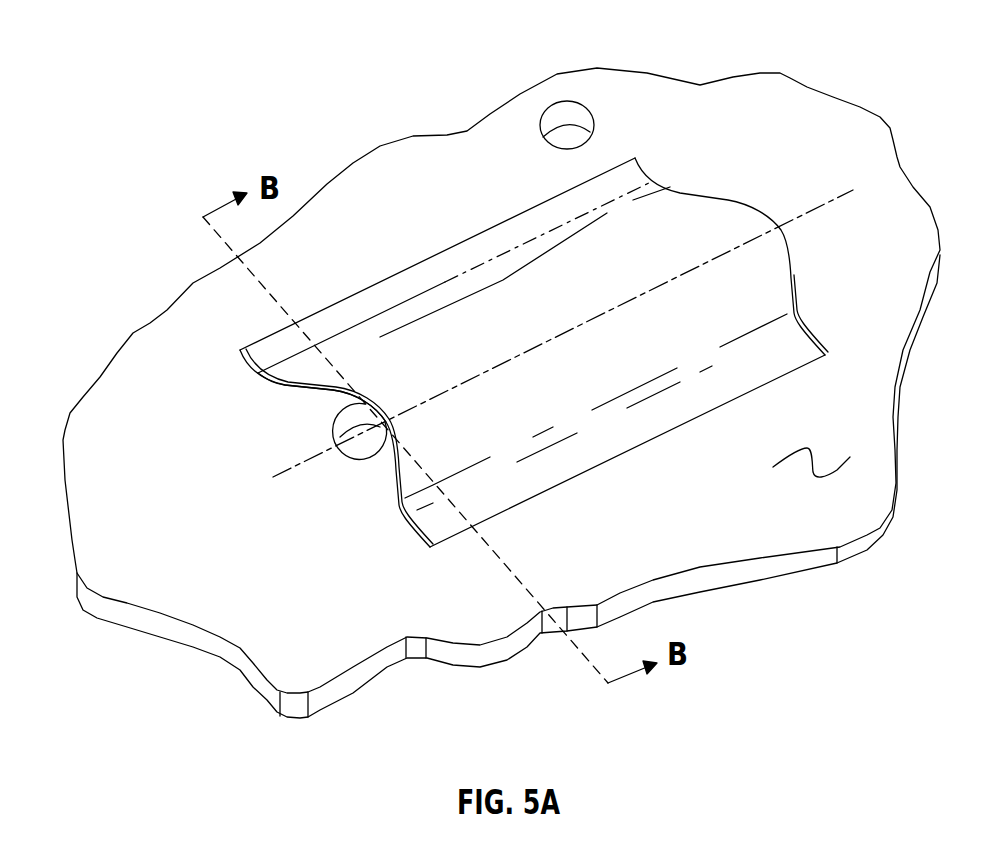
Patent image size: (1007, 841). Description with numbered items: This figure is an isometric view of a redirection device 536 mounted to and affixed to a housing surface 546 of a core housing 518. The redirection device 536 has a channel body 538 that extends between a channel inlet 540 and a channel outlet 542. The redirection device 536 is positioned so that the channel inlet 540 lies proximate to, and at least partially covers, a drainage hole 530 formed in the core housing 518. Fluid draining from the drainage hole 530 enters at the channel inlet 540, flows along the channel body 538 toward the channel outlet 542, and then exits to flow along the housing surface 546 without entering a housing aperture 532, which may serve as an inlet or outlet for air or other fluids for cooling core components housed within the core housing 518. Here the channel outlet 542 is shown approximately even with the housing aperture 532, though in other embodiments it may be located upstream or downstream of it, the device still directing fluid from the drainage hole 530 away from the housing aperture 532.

The core housing 518 is at (723, 550).
The drainage hole 530 is at (358, 453).
The housing aperture 532 is at (580, 124).
The redirection device 536 is at (550, 213).
The channel body 538 is at (540, 317).
The channel inlet 540 is at (300, 393).
The channel outlet 542 is at (750, 207).
The housing surface 546 is at (813, 453).